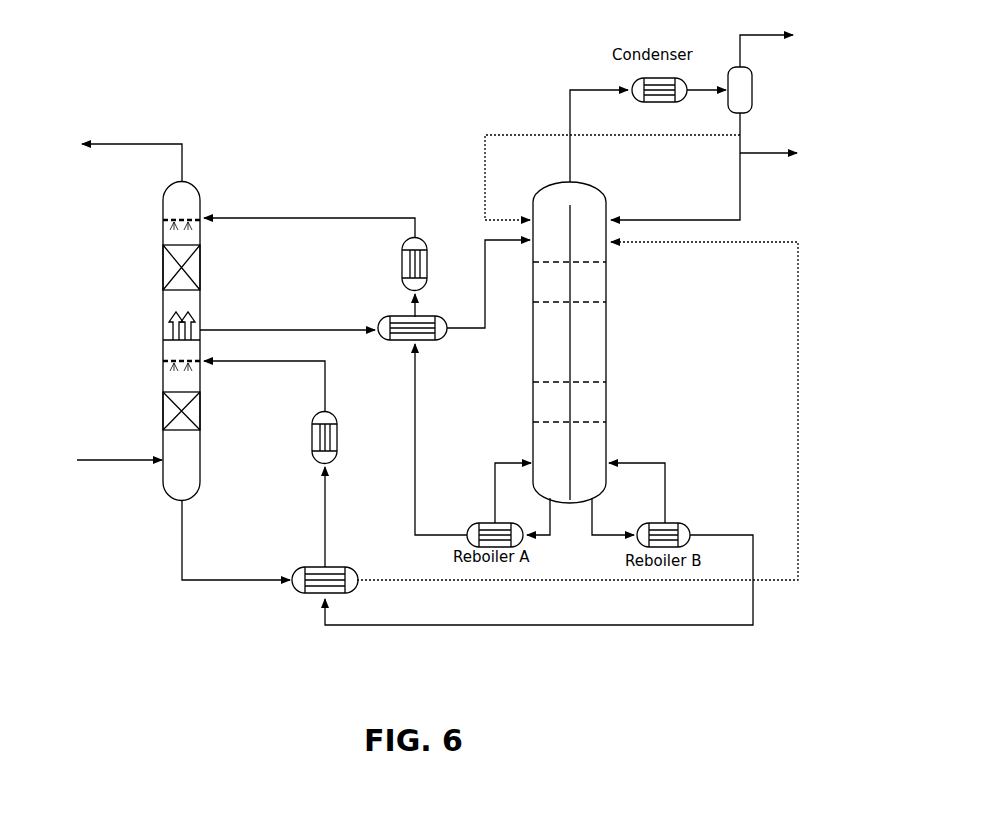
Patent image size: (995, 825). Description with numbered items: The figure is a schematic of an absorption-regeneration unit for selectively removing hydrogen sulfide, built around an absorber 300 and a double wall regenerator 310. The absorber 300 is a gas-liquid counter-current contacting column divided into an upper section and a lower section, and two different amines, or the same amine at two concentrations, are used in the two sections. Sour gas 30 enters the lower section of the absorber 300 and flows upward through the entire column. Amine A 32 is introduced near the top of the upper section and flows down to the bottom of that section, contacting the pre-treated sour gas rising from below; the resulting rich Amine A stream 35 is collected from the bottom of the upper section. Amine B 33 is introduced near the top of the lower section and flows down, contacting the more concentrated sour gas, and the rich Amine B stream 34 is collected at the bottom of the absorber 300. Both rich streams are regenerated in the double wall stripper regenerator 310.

The absorber 300 is at (158, 308).
The sour gas 30 is at (97, 477).
The double wall regenerator 310 is at (611, 330).
The Amine A 32 is at (318, 212).
The Amine B 33 is at (331, 372).
The rich Amine B stream 34 is at (177, 541).
The rich Amine A stream 35 is at (318, 328).